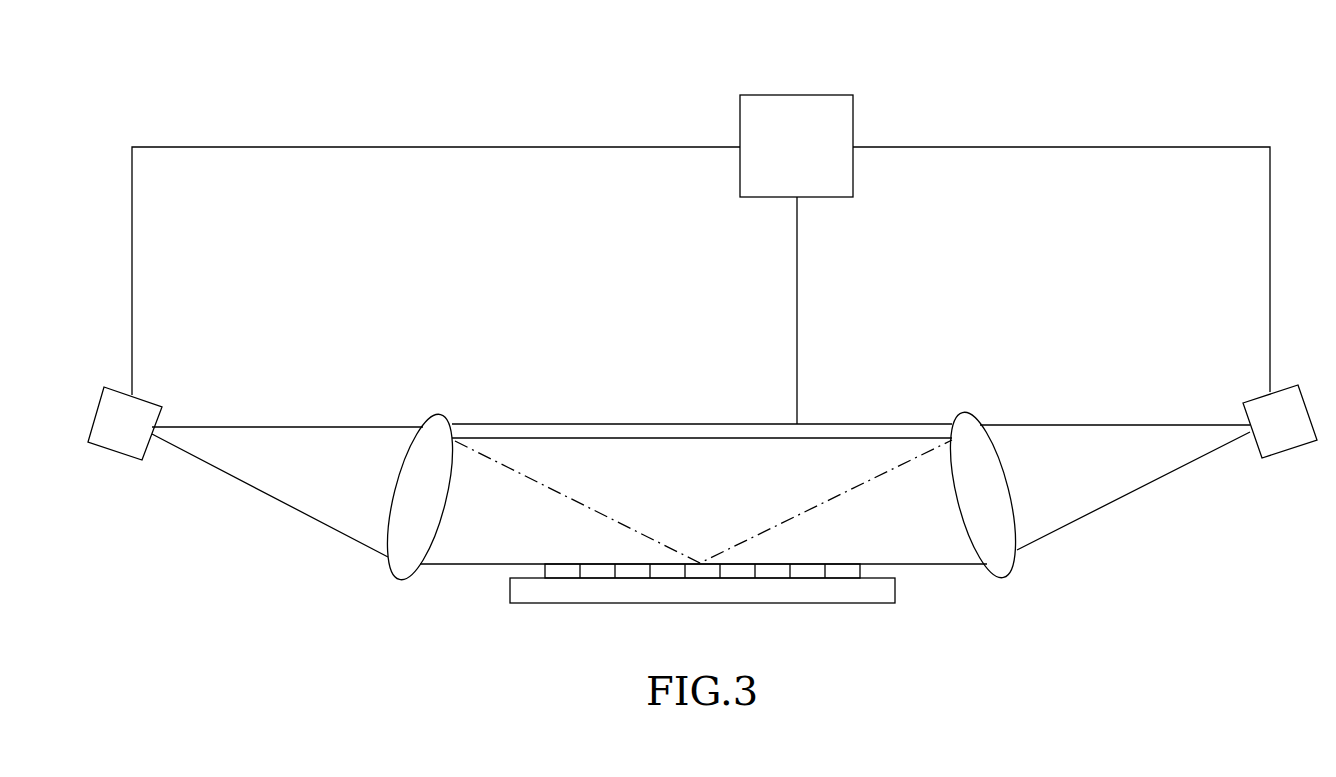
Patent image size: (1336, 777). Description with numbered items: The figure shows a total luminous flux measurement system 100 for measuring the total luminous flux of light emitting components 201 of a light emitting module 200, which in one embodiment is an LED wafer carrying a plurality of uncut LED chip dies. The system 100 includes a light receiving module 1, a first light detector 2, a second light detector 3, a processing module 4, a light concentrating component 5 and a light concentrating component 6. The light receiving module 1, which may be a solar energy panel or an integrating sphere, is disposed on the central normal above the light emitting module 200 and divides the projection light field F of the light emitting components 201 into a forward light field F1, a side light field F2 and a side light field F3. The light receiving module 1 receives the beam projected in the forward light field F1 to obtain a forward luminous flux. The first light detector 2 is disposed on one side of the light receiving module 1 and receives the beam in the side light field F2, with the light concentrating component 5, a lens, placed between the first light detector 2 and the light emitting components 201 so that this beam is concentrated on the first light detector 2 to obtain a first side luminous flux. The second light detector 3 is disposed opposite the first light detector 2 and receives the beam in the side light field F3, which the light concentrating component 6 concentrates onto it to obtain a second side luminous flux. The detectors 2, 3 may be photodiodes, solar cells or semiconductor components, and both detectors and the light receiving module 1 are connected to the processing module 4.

The total luminous flux measurement system 100 is at (207, 67).
The processing module 4 is at (812, 108).
The first light detector 2 is at (117, 440).
The second light detector 3 is at (1290, 438).
The light concentrating component 5 is at (400, 563).
The light concentrating component 6 is at (1008, 563).
The light receiving module 1 is at (890, 428).
The light emitting module 200 is at (895, 595).
The light emitting components 201 is at (706, 573).
The projection light field F is at (573, 345).
The forward light field F1 is at (650, 462).
The side light field F2 is at (512, 514).
The side light field F3 is at (842, 508).